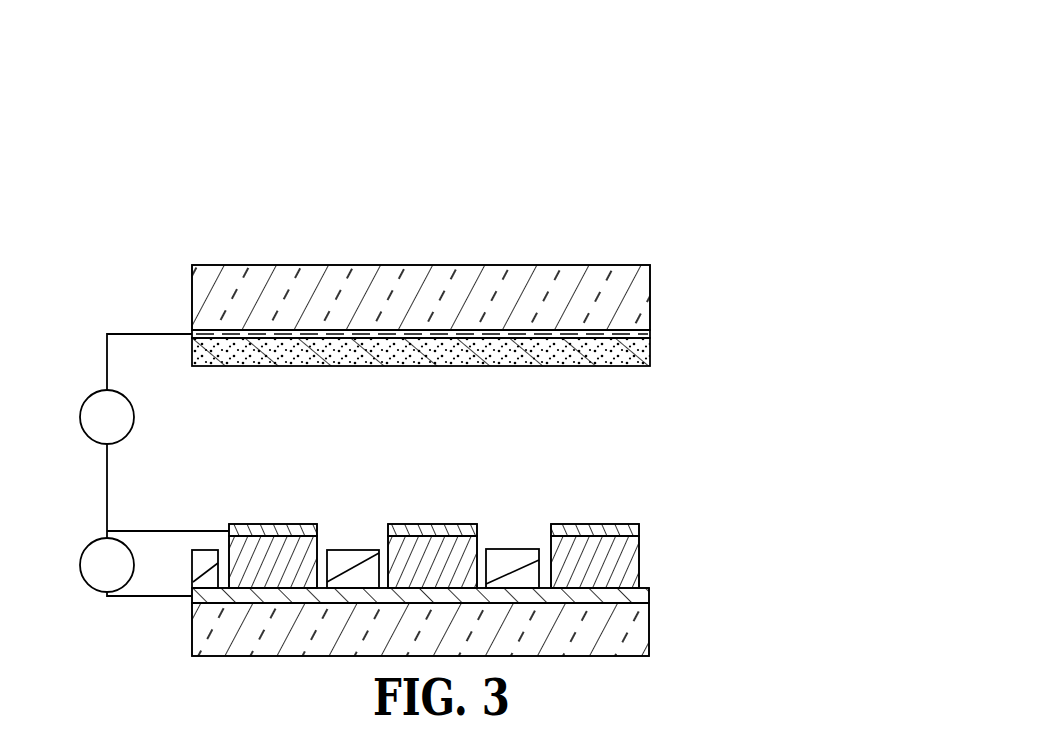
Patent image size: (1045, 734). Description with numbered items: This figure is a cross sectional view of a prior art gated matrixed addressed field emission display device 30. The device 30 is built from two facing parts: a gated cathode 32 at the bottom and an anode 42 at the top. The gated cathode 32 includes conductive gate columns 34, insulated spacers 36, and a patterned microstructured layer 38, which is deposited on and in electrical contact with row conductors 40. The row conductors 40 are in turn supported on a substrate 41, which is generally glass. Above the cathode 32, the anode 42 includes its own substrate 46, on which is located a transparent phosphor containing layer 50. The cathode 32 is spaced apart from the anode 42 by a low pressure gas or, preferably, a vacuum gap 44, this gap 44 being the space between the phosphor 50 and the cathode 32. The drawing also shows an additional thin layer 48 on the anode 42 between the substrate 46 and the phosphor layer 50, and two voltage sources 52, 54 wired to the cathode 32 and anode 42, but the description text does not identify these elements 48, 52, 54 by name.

The gated matrixed addressed field emission display device 30 is at (602, 180).
The gated cathode 32 is at (422, 522).
The conductive gate columns 34 is at (270, 527).
The insulated spacers 36 is at (317, 538).
The patterned microstructured layer 38 is at (203, 553).
The row conductors 40 is at (642, 595).
The substrate 41 is at (642, 632).
The anode 42 is at (497, 263).
The vacuum gap 44 is at (618, 408).
The substrate 46 is at (648, 273).
The upper conductive layer 48 is at (650, 333).
The transparent phosphor containing layer 50 is at (650, 348).
The voltage source V2 52 is at (88, 546).
The voltage source V1 54 is at (88, 398).